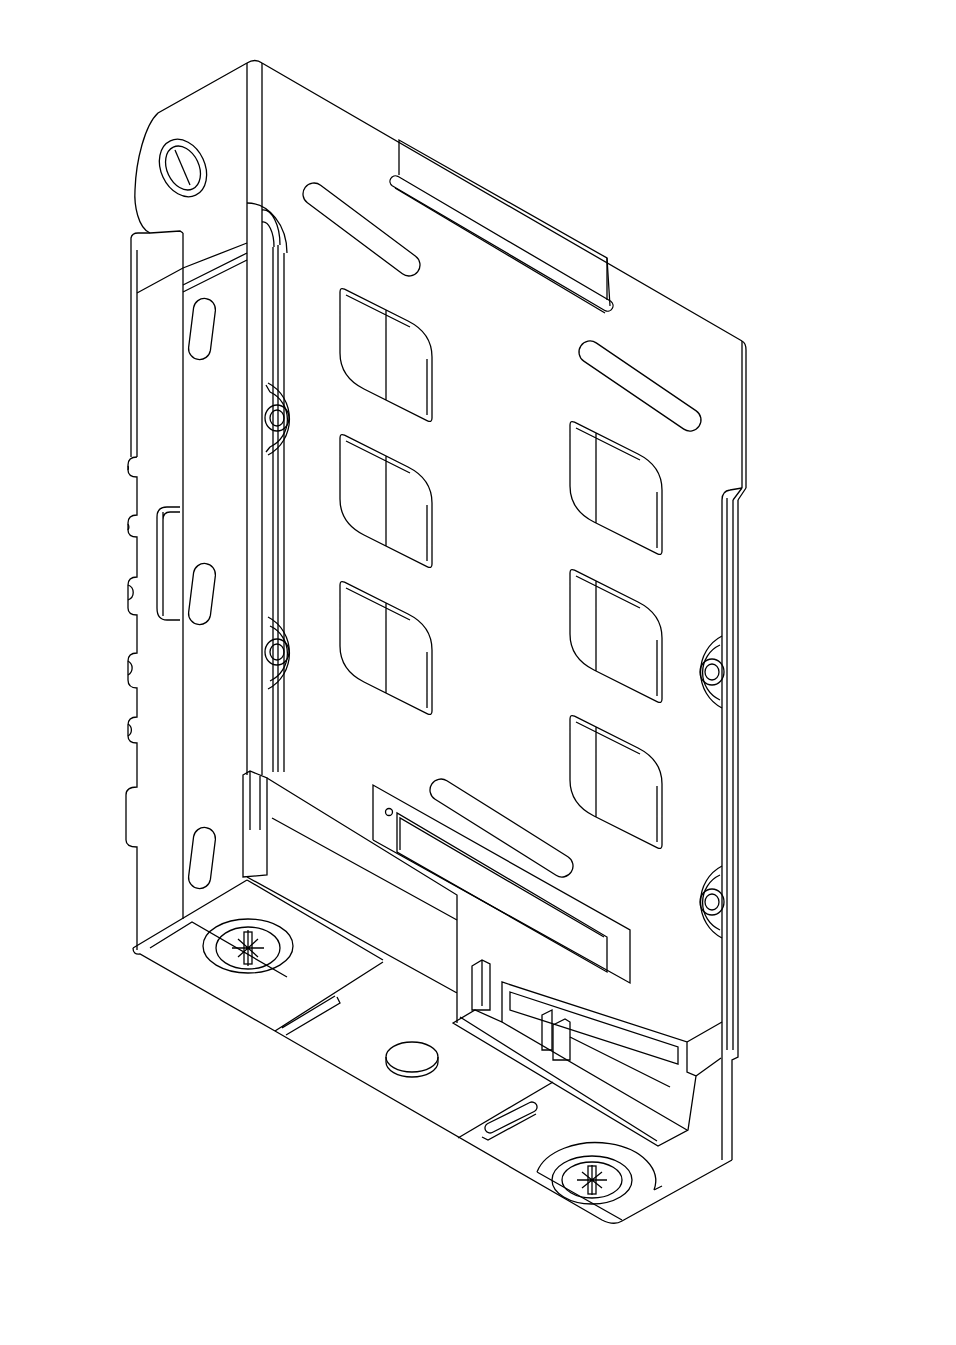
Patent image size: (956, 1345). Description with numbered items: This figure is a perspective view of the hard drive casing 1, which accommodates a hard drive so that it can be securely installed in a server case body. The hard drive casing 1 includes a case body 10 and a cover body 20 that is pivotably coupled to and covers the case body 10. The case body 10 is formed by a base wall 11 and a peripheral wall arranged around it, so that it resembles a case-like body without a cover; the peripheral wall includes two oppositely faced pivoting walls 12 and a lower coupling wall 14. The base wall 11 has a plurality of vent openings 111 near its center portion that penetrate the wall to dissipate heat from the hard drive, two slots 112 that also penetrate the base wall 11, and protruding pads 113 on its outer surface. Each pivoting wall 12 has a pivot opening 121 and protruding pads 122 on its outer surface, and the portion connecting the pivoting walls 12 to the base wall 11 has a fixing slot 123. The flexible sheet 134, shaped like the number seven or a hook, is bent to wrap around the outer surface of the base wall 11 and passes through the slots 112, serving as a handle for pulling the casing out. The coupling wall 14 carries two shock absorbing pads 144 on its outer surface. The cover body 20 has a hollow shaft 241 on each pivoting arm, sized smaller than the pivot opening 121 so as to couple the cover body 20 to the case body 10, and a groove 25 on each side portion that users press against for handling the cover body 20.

The hard drive casing 1 is at (683, 131).
The case body 10 is at (206, 81).
The base wall 11 is at (688, 585).
The pivoting wall 12 is at (205, 680).
The coupling wall 14 is at (318, 1062).
The cover body 20 is at (116, 441).
The groove 25 is at (165, 545).
The vent openings 111 is at (638, 795).
The slot 112 is at (620, 308).
The protruding pad 113 is at (690, 405).
The pivot opening 121 is at (212, 168).
The protruding pads 122 is at (197, 326).
The fixing slot 123 is at (262, 493).
The flexible sheet 134 is at (515, 215).
The shock absorbing pads 144 is at (232, 968).
The hollow shaft 241 is at (175, 160).